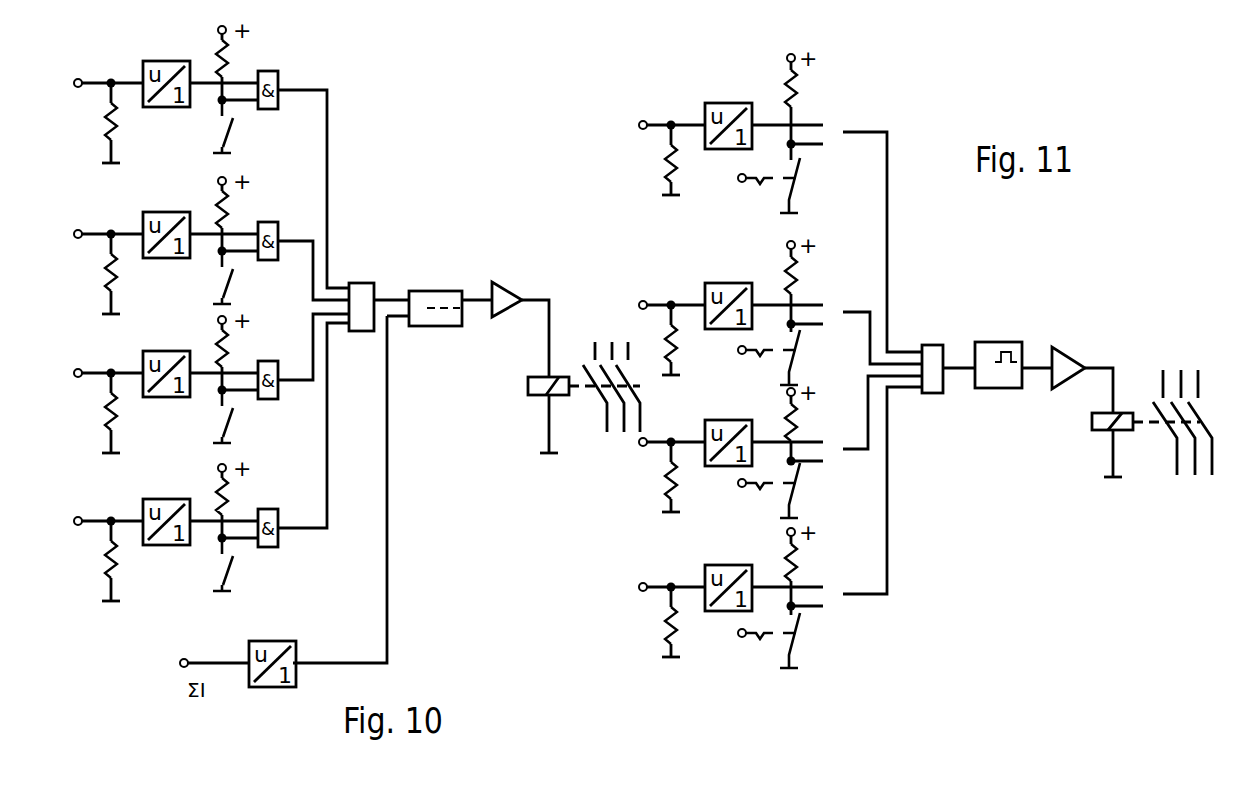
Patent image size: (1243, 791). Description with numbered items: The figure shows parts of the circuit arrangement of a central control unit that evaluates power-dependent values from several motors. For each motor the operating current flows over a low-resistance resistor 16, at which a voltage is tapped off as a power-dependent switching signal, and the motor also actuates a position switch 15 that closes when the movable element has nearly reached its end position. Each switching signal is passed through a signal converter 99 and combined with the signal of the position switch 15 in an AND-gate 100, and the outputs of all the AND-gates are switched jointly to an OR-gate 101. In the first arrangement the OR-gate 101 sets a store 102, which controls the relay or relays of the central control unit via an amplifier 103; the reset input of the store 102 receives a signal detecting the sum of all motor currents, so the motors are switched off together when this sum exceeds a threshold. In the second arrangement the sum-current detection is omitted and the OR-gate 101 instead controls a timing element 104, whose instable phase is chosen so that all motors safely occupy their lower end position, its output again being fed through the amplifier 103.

In FIG. 10, the position switch 15 is at (232, 133).
In FIG. 11, the position switch 15 is at (796, 183).
In FIG. 10, the low-resistance resistor 16 is at (116, 128).
In FIG. 11, the low-resistance resistor 16 is at (663, 158).
In FIG. 10, the signal converter 99 is at (168, 60).
In FIG. 11, the signal converter 99 is at (723, 103).
In FIG. 10, the AND-gate 100 is at (268, 71).
In FIG. 10, the OR-gate 101 is at (368, 282).
In FIG. 11, the OR-gate 101 is at (933, 344).
In FIG. 10, the store 102 is at (438, 290).
In FIG. 10, the amplifier 103 is at (510, 293).
In FIG. 11, the amplifier 103 is at (1073, 353).
In FIG. 11, the timing element 104 is at (1002, 342).